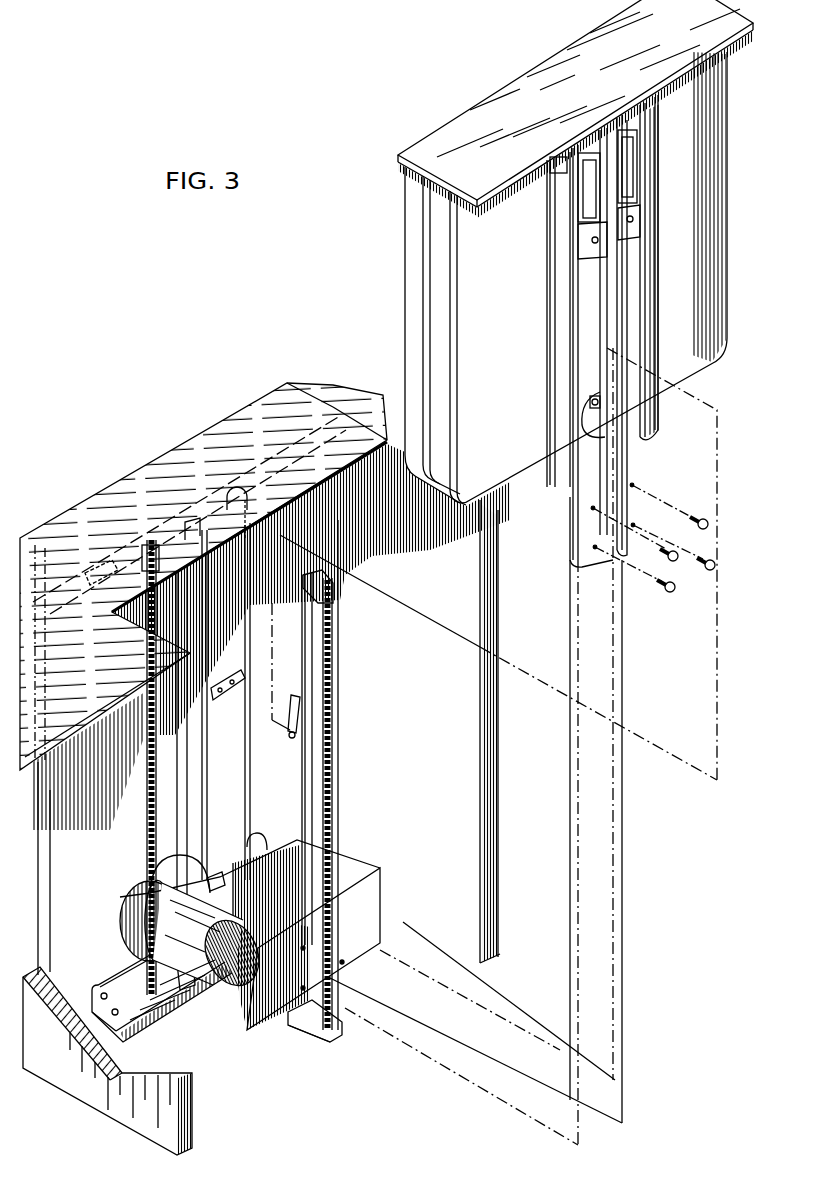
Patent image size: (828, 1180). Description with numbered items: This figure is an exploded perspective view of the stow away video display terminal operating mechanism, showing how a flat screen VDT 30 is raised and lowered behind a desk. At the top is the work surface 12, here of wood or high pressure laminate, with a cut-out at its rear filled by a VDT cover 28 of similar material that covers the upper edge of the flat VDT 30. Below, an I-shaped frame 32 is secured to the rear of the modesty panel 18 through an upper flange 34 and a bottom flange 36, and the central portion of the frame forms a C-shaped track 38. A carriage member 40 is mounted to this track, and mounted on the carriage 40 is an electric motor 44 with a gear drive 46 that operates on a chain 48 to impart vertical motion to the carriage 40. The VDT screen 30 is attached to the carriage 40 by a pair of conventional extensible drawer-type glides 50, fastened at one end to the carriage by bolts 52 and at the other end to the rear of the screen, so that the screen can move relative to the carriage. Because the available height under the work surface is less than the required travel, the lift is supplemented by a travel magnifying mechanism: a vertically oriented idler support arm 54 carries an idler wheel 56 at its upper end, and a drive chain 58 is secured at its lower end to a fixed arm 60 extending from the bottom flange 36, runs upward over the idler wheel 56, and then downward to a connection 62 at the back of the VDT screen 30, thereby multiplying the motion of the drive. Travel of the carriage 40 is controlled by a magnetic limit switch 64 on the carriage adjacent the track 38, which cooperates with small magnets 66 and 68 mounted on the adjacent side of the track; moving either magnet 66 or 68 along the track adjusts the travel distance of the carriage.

The work surface 12 is at (160, 492).
The modesty panel 18 is at (93, 838).
The VDT cover 28 is at (490, 118).
The flat screen VDT 30 is at (405, 245).
The I-shaped frame 32 is at (236, 773).
The flange 34 is at (316, 425).
The bottom flange 36 is at (125, 1007).
The C-shaped track 38 is at (193, 747).
The carriage member 40 is at (257, 1027).
The electric motor 44 is at (235, 975).
The gear drive 46 is at (133, 938).
The chain 48 is at (147, 802).
The extensible drawer-type glides 50 is at (558, 283).
The bolts 52 is at (700, 522).
The idler support arm 54 is at (310, 747).
The idler wheel 56 is at (333, 595).
The drive chain 58 is at (334, 700).
The fixed arm 60 is at (312, 1020).
The connection 62 is at (592, 393).
The magnetic limit switch 64 is at (247, 853).
The magnet 66 is at (242, 670).
The magnet 68 is at (214, 872).